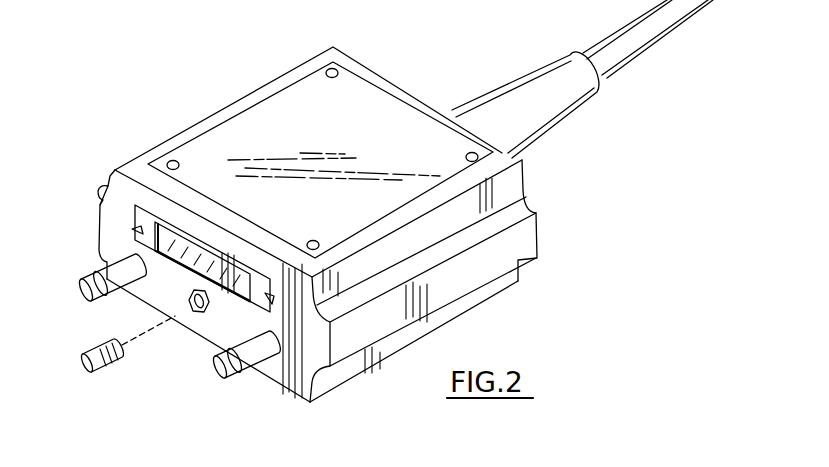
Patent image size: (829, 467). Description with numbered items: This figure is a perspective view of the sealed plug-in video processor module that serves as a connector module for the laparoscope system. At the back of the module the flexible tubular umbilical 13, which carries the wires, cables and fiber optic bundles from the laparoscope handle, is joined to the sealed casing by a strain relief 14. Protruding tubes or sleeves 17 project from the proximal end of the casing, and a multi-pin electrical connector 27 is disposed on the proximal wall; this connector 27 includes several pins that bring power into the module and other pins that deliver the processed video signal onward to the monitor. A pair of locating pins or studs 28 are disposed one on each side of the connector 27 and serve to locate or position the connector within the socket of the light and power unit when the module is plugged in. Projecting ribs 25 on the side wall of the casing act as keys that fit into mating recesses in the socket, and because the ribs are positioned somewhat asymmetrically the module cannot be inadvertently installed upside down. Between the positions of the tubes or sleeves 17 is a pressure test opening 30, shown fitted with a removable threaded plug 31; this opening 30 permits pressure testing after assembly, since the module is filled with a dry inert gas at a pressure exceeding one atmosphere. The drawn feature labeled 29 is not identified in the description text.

The flexible tubular umbilical 13 is at (679, 30).
The strain relief 14 is at (590, 106).
The protruding tubes or sleeves 17 is at (82, 282).
The projecting ribs 25 is at (522, 252).
The multi-pin electrical connector 27 is at (232, 253).
The locating pins or studs 28 is at (97, 203).
The cover plate 29 is at (502, 155).
The pressure test opening 30 is at (198, 313).
The threaded plug 31 is at (97, 375).